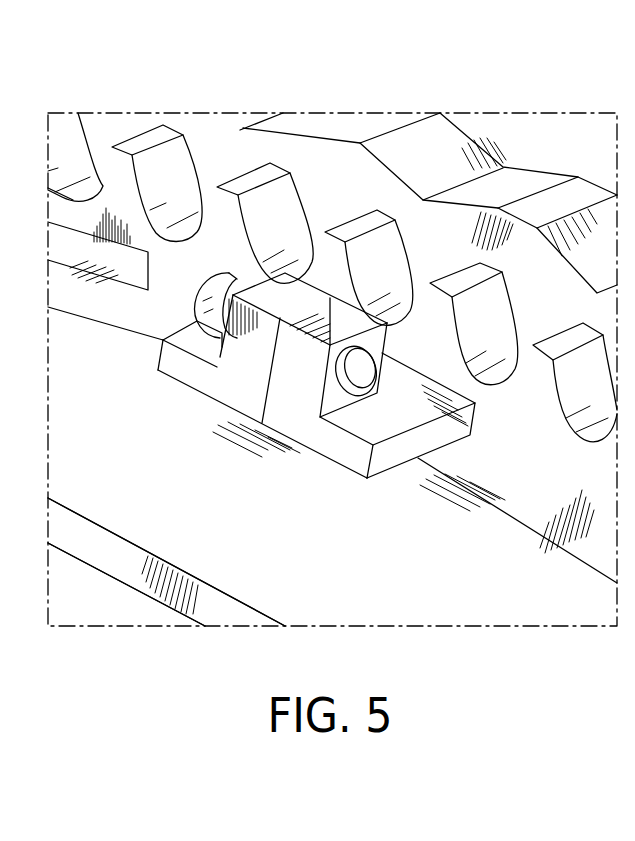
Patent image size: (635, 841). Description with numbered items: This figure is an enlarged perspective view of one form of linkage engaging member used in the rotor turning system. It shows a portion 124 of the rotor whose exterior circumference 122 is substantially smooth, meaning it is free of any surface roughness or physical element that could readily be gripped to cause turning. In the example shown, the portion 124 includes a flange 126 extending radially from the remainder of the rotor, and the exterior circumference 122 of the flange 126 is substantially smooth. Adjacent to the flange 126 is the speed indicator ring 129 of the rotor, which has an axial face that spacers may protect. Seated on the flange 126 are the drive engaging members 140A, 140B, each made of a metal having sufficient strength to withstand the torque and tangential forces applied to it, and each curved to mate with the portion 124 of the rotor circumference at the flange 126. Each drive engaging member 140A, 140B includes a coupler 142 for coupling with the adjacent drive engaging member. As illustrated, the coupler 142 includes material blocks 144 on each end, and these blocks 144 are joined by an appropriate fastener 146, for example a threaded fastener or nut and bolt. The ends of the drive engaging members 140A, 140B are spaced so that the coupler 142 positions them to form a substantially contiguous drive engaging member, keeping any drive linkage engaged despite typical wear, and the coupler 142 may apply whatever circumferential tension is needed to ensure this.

The exterior circumference 122 is at (316, 546).
The portion 124 is at (202, 597).
The flange 126 is at (202, 597).
The speed indicator ring 129 is at (418, 153).
The drive engaging member 140A is at (186, 262).
The drive engaging member 140B is at (433, 343).
The coupler 142 is at (286, 319).
The material block 144 is at (338, 317).
The fastener 146 is at (223, 288).